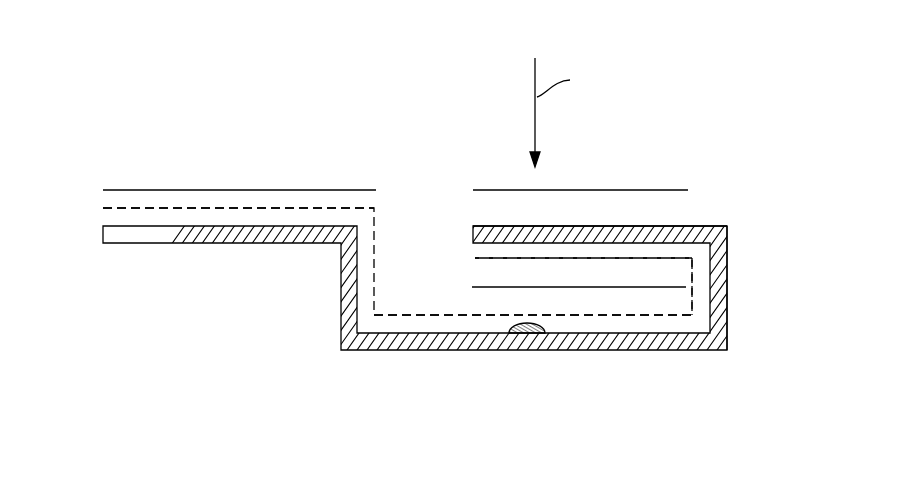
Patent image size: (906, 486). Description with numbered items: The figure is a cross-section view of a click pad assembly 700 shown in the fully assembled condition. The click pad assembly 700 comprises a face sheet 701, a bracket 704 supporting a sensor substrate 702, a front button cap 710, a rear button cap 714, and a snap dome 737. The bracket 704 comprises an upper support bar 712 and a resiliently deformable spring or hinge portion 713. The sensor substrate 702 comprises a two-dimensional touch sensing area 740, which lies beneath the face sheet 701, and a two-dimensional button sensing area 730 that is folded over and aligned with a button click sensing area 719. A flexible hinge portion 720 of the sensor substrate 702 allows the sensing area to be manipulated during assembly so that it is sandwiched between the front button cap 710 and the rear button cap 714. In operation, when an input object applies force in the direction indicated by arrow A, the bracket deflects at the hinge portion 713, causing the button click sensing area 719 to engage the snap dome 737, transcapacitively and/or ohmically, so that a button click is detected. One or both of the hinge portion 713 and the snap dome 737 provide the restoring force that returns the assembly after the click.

The click pad assembly 700 is at (105, 42).
The face sheet 701 is at (174, 189).
The sensor substrate 702 is at (103, 208).
The bracket 704 is at (103, 240).
The front button cap 710 is at (668, 189).
The upper support bar 712 is at (728, 312).
The hinge portion 713 is at (728, 231).
The rear button cap 714 is at (479, 287).
The button click sensing area 719 is at (645, 318).
The flexible hinge portion 720 is at (692, 292).
The button sensing area 730 is at (474, 257).
The snap dome 737 is at (527, 336).
The touch sensing area 740 is at (216, 208).